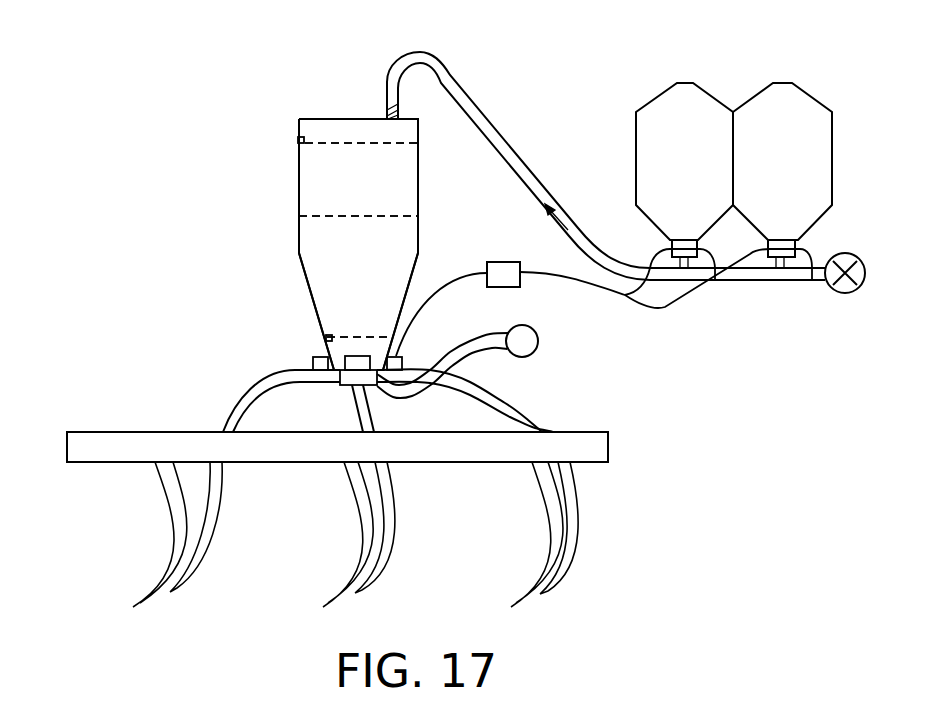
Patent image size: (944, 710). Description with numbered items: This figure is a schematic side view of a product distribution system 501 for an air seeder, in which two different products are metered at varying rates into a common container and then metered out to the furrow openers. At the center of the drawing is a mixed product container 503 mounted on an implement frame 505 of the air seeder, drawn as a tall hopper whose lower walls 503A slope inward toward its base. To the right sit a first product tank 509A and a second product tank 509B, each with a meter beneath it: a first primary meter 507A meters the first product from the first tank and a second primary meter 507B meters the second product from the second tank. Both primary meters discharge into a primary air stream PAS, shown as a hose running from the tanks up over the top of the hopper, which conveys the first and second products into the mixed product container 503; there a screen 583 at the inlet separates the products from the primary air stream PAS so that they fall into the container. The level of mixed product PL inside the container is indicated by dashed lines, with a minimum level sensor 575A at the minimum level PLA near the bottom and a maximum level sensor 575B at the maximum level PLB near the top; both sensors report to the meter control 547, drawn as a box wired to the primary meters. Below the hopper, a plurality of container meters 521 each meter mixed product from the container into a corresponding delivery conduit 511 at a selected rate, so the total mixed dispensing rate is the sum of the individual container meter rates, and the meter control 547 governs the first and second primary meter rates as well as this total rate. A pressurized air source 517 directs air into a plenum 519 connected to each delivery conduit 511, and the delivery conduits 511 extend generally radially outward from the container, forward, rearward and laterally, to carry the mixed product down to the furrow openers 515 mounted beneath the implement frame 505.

The product distribution system 501 is at (134, 220).
The mixed product container 503 is at (340, 119).
The lower walls 503A is at (315, 303).
The implement frame 505 is at (609, 462).
The first primary meter 507A is at (716, 272).
The second primary meter 507B is at (812, 270).
The first product tank 509A is at (655, 97).
The second product tank 509B is at (757, 95).
The delivery conduits 511 is at (228, 405).
The furrow openers 515 is at (148, 590).
The pressurized air source 517 is at (538, 346).
The plenum 519 is at (345, 386).
The container meters 521 is at (313, 363).
The meter control 547 is at (518, 287).
The minimum level sensor 575A is at (325, 339).
The maximum level sensor 575B is at (298, 140).
The screen 583 is at (385, 115).
The primary air stream PAS is at (560, 220).
The product level PL is at (325, 216).
The minimum level PLA is at (350, 337).
The maximum level PLB is at (324, 143).